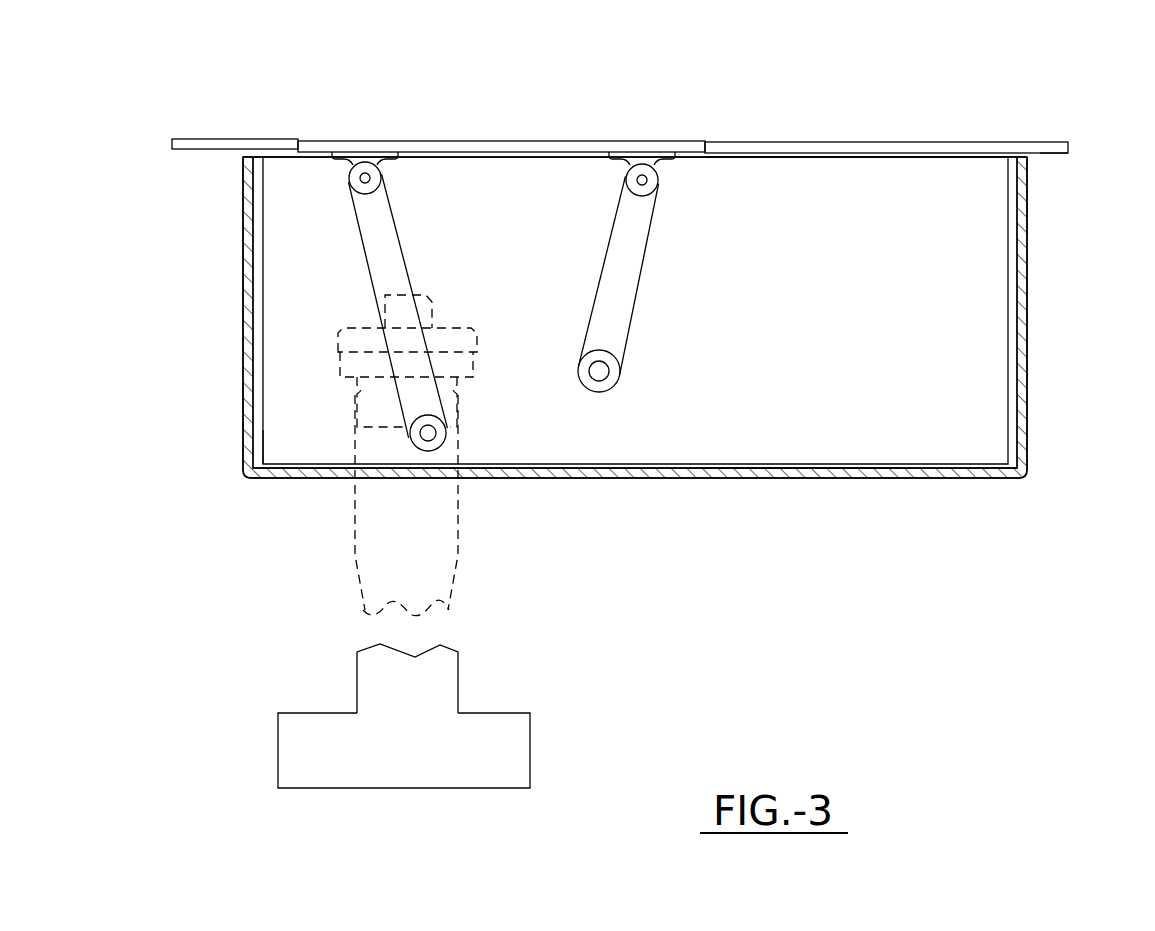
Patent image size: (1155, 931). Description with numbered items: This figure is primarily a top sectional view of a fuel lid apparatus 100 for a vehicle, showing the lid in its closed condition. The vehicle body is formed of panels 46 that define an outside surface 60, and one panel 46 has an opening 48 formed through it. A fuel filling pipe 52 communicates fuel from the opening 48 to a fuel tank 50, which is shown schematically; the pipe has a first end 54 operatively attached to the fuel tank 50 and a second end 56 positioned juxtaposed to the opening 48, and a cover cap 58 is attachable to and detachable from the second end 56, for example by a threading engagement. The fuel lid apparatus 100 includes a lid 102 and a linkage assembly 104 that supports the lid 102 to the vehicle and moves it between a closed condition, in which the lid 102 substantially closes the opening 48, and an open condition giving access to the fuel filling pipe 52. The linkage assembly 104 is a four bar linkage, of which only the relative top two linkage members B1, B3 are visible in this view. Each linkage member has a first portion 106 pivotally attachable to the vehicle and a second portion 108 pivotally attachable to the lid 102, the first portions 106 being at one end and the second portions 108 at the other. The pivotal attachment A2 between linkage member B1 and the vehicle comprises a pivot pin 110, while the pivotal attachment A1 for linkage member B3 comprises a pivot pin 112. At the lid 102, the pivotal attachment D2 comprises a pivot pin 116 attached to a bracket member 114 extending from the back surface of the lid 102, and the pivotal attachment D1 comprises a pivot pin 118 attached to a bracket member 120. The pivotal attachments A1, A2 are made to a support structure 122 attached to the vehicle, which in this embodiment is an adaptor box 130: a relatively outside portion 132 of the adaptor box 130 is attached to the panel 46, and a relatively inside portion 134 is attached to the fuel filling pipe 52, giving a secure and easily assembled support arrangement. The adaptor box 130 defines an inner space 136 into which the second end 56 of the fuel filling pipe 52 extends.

The fuel lid apparatus 100 is at (855, 130).
The panel 46 is at (957, 142).
The opening 48 is at (286, 138).
The lid 102 is at (515, 140).
The outside surface 60 is at (1033, 138).
The linkage assembly 104 is at (240, 298).
The adaptor box 130 is at (1027, 272).
The support structure 122 is at (1027, 338).
The outside portion 132 is at (805, 160).
The inside portion 134 is at (298, 465).
The inner space 136 is at (838, 468).
The bracket member 114 is at (348, 164).
The pivot pin 116 is at (347, 190).
The bracket member 120 is at (622, 178).
The pivot pin 118 is at (660, 180).
The second portion 108 is at (386, 192).
The first portion 106 is at (622, 333).
The pivot pin 112 is at (582, 357).
The pivot pin 110 is at (412, 445).
The cover cap 58 is at (430, 340).
The second end 56 is at (356, 404).
The fuel filling pipe 52 is at (388, 535).
The first end 54 is at (370, 674).
The fuel tank 50 is at (300, 752).
The pivotal attachment D1 is at (644, 178).
The pivotal attachment D2 is at (365, 178).
The pivotal attachment A1 is at (605, 368).
The pivotal attachment A2 is at (428, 430).
The first linkage member B1 is at (392, 225).
The third linkage member B3 is at (628, 272).